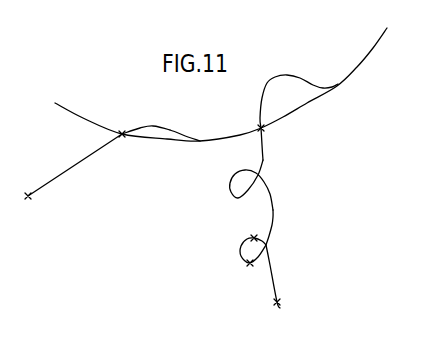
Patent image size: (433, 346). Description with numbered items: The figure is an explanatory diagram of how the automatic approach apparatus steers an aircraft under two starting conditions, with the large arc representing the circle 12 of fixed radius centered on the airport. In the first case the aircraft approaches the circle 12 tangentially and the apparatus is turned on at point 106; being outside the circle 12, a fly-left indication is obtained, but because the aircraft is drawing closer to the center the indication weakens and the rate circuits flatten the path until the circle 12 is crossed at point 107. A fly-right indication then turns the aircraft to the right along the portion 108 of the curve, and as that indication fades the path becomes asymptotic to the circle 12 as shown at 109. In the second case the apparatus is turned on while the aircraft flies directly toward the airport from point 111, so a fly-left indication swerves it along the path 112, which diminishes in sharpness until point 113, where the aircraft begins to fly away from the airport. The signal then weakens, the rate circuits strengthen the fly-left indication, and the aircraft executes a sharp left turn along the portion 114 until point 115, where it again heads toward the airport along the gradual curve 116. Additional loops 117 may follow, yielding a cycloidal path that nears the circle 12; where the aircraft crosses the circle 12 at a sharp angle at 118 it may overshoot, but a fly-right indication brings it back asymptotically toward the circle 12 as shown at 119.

The circle 12 is at (87, 120).
The point 106 is at (32, 196).
The point 107 is at (118, 135).
The portion of the curve 108 is at (160, 122).
The asymptotic path 109 is at (188, 137).
The point 111 is at (283, 304).
The path 112 is at (268, 252).
The point 113 is at (254, 236).
The portion of the curve 114 is at (240, 255).
The point 115 is at (250, 266).
The gradual curve 116 is at (273, 197).
The loop 117 is at (233, 177).
The intersection point 118 is at (265, 129).
The asymptotic path 119 is at (337, 83).